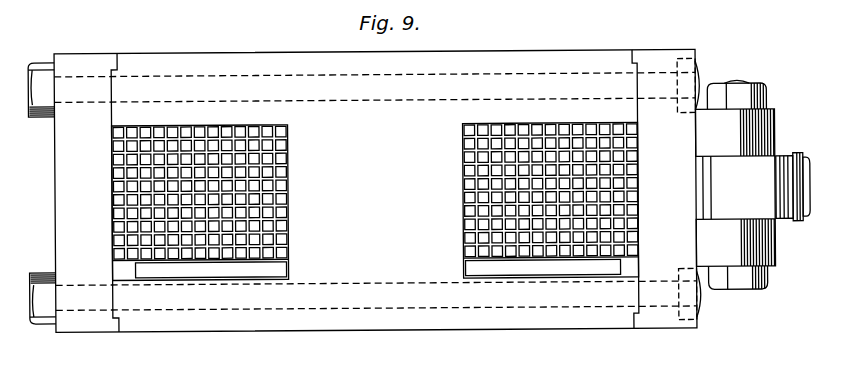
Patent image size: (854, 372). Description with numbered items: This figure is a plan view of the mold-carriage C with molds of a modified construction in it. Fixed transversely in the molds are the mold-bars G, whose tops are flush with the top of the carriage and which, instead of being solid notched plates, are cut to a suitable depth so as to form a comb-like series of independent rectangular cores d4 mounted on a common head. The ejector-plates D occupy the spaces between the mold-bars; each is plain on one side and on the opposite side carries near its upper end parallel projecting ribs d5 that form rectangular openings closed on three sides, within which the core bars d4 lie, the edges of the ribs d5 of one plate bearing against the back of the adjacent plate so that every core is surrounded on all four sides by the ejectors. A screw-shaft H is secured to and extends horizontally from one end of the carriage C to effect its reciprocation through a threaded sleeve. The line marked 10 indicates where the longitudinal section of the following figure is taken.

The mold-carriage C is at (375, 190).
The ejector-plates D is at (213, 182).
The mold-bars G is at (285, 130).
The cores d4 is at (135, 132).
The ribs d5 is at (133, 261).
The bolts 10 is at (110, 235).
The screw-shaft H is at (799, 156).